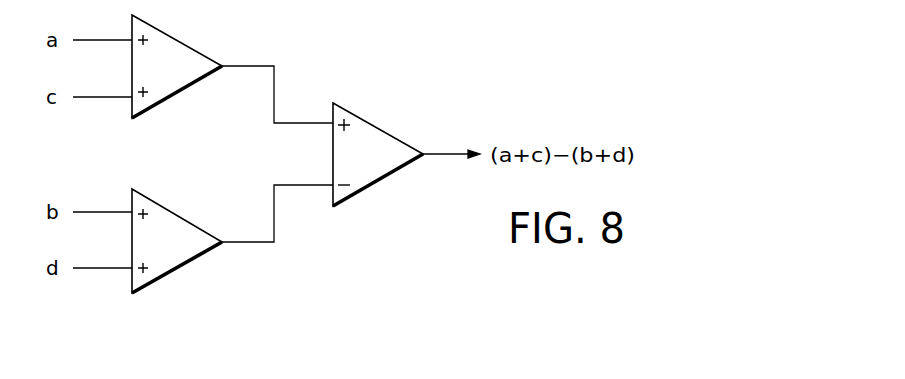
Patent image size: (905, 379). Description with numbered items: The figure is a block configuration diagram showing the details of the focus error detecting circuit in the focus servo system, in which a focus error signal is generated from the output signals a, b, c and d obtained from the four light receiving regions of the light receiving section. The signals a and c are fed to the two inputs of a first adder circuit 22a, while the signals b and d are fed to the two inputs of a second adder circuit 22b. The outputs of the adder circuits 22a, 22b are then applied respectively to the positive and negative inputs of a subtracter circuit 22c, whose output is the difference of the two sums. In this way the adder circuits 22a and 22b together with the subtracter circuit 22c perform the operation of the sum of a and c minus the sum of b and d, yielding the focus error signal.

The adder circuit 22a is at (183, 88).
The adder circuit 22b is at (177, 220).
The subtracter circuit 22c is at (383, 128).